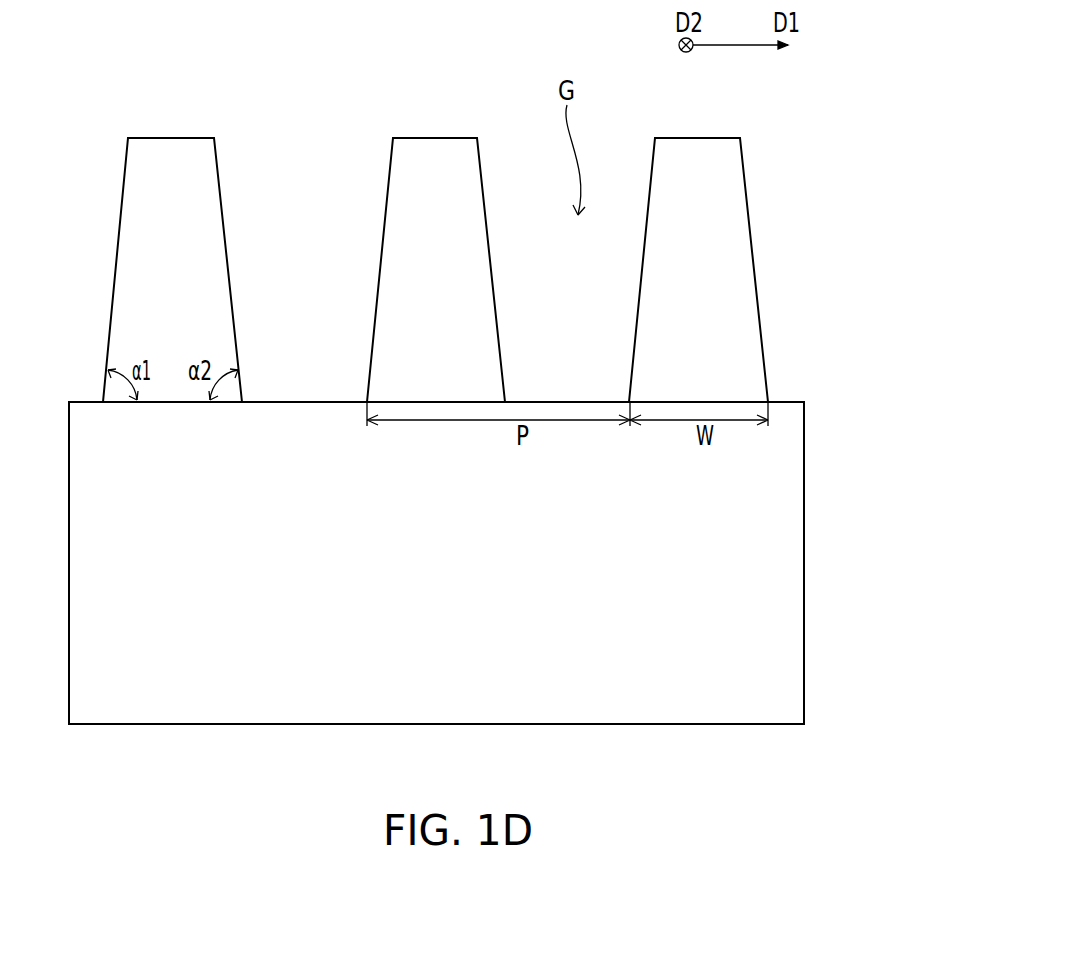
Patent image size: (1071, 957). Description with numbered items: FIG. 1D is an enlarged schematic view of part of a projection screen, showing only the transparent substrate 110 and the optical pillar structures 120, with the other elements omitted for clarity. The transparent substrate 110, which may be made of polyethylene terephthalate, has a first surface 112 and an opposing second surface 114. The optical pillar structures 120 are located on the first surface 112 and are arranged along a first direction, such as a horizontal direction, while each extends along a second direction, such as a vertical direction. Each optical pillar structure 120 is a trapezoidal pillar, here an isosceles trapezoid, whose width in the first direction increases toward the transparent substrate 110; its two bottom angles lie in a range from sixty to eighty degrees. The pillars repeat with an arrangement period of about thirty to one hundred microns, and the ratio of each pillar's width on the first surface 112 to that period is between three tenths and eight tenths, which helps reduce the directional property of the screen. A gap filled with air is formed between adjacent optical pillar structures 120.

The transparent substrate 110 is at (797, 578).
The first surface 112 is at (792, 400).
The second surface 114 is at (791, 727).
The optical pillar structures 120 is at (215, 179).